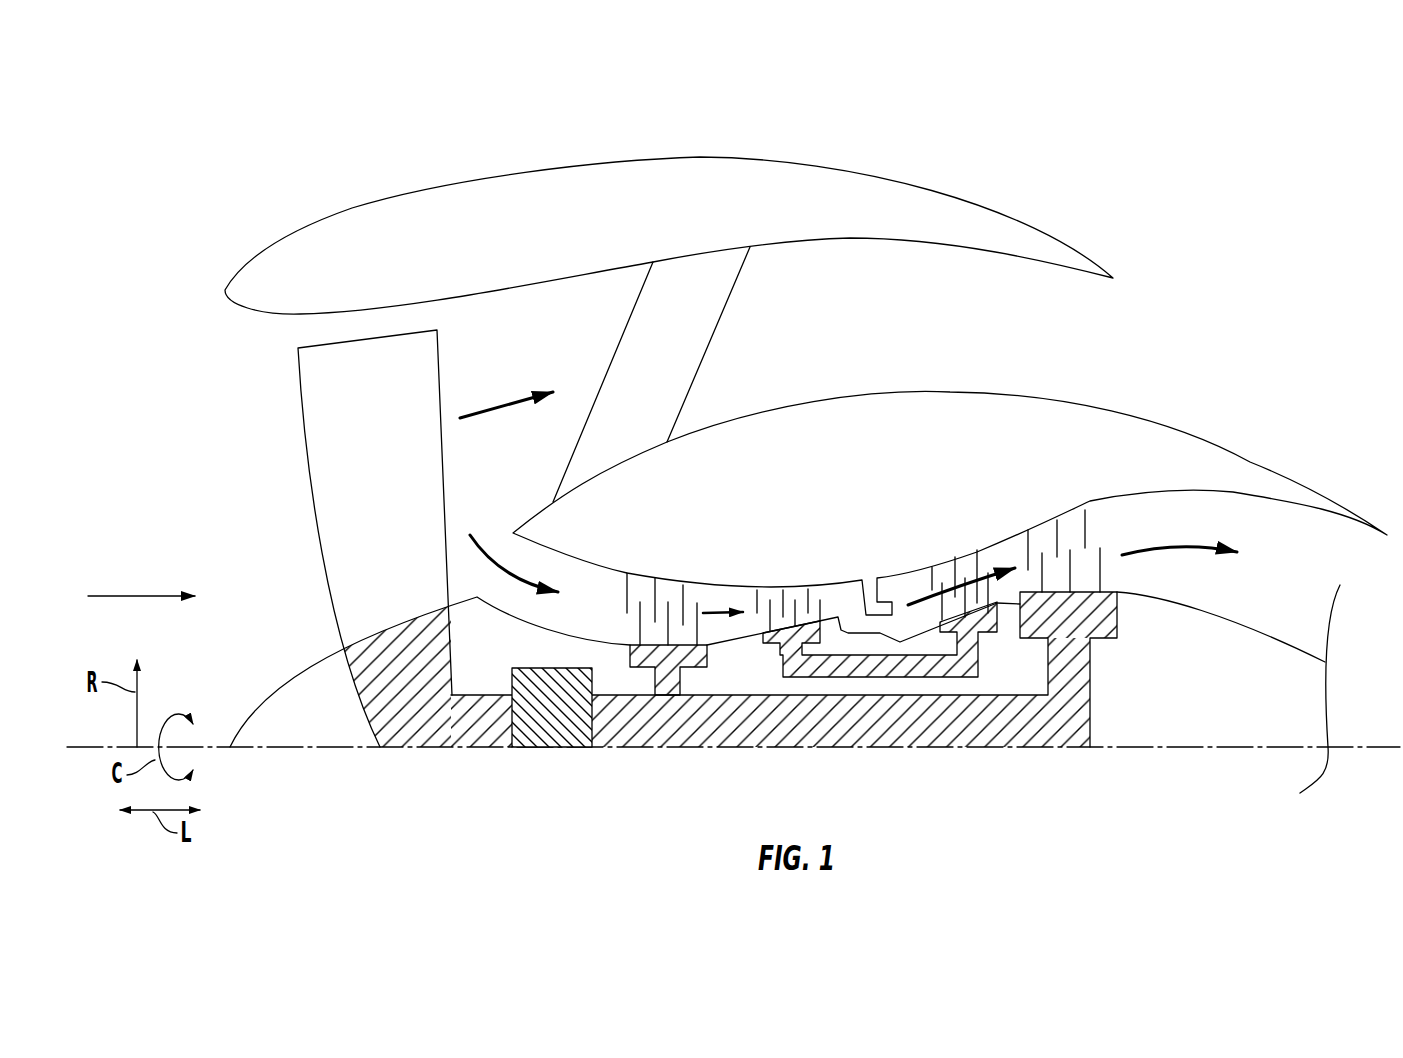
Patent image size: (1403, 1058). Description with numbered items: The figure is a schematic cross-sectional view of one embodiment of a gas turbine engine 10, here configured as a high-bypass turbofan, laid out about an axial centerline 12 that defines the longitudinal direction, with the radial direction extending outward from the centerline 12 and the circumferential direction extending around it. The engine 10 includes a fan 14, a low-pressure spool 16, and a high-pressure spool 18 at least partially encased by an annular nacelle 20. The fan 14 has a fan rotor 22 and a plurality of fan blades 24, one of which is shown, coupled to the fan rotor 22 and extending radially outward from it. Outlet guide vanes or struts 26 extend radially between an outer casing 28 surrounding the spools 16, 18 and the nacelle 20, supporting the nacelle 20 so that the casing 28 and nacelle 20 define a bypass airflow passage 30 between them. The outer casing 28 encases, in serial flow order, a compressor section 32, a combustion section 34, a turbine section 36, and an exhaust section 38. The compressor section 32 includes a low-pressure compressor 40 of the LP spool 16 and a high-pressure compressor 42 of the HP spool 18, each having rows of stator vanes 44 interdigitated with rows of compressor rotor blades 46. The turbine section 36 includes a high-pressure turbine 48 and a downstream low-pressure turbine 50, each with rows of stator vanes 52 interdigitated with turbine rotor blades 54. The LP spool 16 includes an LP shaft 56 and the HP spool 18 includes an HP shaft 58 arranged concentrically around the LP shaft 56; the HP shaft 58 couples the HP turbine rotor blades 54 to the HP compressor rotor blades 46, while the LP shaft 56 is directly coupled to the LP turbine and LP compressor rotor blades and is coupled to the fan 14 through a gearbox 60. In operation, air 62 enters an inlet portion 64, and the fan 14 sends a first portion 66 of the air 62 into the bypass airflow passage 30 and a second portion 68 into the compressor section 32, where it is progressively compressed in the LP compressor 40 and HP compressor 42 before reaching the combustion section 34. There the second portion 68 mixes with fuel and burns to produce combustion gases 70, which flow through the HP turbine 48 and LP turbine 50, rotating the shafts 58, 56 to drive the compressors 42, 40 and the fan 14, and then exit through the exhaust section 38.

The gas turbine engine 10 is at (252, 120).
The axial centerline 12 is at (1187, 750).
The fan 14 is at (285, 417).
The low-pressure (LP) spool 16 is at (673, 706).
The high-pressure (HP) spool 18 is at (977, 695).
The annular nacelle 20 is at (352, 208).
The fan rotor 22 is at (300, 675).
The fan blade 24 is at (312, 520).
The outlet guide vane or strut 26 is at (622, 337).
The outer casing 28 is at (1018, 395).
The bypass airflow passage 30 is at (836, 332).
The compressor section 32 is at (715, 548).
The combustion section 34 is at (867, 553).
The turbine section 36 is at (1013, 519).
The exhaust section 38 is at (1337, 567).
The low-pressure (LP) compressor 40 is at (650, 555).
The high-pressure (HP) compressor 42 is at (780, 553).
The stator vane 44 is at (817, 587).
The compressor rotor blade 46 is at (830, 610).
The high-pressure (HP) turbine 48 is at (940, 543).
The low-pressure (LP) turbine 50 is at (1084, 543).
The stator vane 52 is at (1093, 520).
The turbine rotor blade 54 is at (990, 590).
The low-pressure (LP) shaft 56 is at (782, 727).
The high-pressure (HP) shaft 58 is at (940, 678).
The gearbox 60 is at (560, 727).
The air 62 is at (140, 595).
The inlet portion 64 is at (223, 328).
The first portion of the air 66 is at (505, 400).
The second portion of the air 68 is at (710, 620).
The combustion gases 70 is at (1167, 547).